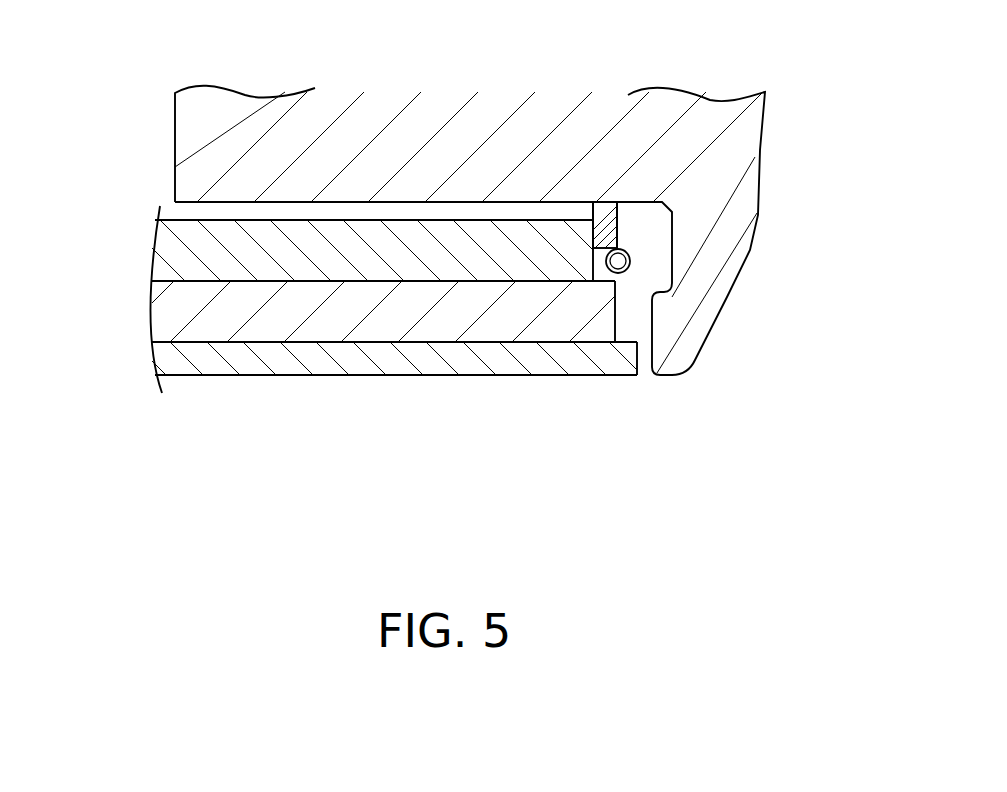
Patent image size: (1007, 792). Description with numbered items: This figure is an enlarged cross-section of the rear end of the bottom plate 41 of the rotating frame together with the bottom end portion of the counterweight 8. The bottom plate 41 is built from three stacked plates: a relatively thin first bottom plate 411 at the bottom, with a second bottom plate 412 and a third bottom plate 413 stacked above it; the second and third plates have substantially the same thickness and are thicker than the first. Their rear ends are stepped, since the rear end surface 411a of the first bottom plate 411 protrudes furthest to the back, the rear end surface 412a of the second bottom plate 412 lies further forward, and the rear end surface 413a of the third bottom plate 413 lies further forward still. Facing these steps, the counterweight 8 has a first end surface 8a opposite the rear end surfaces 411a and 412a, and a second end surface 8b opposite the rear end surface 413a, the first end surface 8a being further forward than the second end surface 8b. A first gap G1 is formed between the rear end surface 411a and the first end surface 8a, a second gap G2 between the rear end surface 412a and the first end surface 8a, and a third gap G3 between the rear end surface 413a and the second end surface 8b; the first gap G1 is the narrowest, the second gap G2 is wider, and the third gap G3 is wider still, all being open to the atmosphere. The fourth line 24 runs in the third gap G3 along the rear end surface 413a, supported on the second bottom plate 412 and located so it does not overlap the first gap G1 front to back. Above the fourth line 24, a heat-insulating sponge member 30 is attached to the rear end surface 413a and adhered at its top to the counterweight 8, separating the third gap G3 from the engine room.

The counterweight 8 is at (737, 140).
The first end surface 8a is at (647, 355).
The second end surface 8b is at (688, 250).
The fourth line 24 is at (647, 225).
The sponge member 30 is at (603, 202).
The bottom plate 41 is at (131, 342).
The first bottom plate 411 is at (473, 375).
The rear end surface 411a is at (640, 365).
The second bottom plate 412 is at (185, 310).
The rear end surface 412a is at (618, 305).
The third bottom plate 413 is at (187, 253).
The rear end surface 413a is at (618, 249).
The first gap G1 is at (695, 358).
The second gap G2 is at (612, 318).
The third gap G3 is at (645, 233).